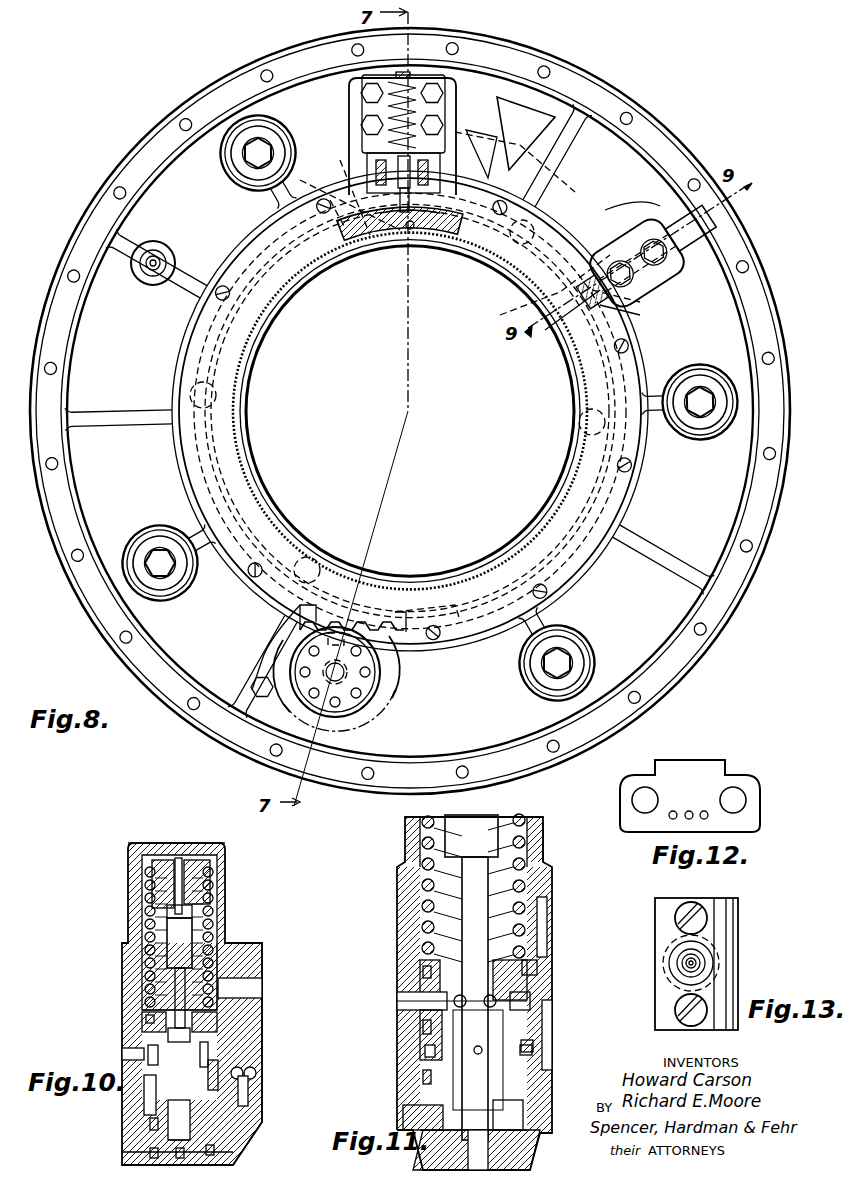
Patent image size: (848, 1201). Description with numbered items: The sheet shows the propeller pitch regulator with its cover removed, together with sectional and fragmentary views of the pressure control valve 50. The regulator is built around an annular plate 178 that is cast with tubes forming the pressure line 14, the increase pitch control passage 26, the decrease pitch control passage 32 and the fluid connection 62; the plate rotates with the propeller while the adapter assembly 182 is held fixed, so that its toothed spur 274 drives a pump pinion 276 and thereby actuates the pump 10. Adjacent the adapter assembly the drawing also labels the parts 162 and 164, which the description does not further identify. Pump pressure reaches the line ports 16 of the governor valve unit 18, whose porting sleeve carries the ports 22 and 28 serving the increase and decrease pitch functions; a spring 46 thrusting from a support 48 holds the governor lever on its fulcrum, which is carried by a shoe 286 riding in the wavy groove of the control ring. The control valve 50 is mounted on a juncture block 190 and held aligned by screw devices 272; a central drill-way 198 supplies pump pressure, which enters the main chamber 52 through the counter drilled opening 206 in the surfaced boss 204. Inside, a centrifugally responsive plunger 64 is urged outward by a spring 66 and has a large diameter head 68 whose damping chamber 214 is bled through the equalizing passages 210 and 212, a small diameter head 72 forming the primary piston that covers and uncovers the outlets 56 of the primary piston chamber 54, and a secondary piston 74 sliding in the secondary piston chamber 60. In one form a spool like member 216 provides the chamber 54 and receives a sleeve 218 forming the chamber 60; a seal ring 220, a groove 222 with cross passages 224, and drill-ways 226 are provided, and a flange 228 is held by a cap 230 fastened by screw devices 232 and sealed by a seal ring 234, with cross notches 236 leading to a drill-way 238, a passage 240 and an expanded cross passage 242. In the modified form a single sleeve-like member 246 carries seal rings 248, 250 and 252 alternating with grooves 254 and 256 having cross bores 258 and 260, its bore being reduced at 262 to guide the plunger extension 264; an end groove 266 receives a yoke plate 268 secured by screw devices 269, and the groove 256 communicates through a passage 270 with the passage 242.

In FIG. 8, the pump 10 is at (672, 255).
In FIG. 8, the pressure line 14 is at (550, 178).
In FIG. 8, the line ports 16 is at (372, 120).
In FIG. 8, the governor valve unit 18 is at (440, 112).
In FIG. 8, the port 22 is at (362, 100).
In FIG. 8, the control passage 26 is at (345, 190).
In FIG. 8, the port 28 is at (376, 143).
In FIG. 8, the control passage 32 is at (290, 298).
In FIG. 8, the spring 46 is at (428, 145).
In FIG. 8, the support 48 is at (408, 76).
In FIG. 8, the pressure control valve 50 is at (668, 212).
In FIG. 10, the pressure control valve 50 is at (102, 887).
In FIG. 11, the pressure control valve 50 is at (576, 843).
In FIG. 12, the pressure control valve 50 is at (788, 809).
In FIG. 10, the main chamber 52 is at (146, 912).
In FIG. 11, the main chamber 52 is at (520, 856).
In FIG. 10, the primary piston chamber 54 is at (222, 1020).
In FIG. 11, the primary piston chamber 54 is at (500, 975).
In FIG. 10, the outlets 56 is at (128, 1057).
In FIG. 11, the outlets 56 is at (410, 998).
In FIG. 12, the outlets 56 is at (704, 810).
In FIG. 10, the secondary piston chamber 60 is at (232, 1160).
In FIG. 8, the fluid connection 62 is at (512, 316).
In FIG. 10, the plunger 64 is at (176, 950).
In FIG. 11, the plunger 64 is at (495, 830).
In FIG. 10, the spring 66 is at (148, 932).
In FIG. 11, the spring 66 is at (525, 885).
In FIG. 10, the large diameter head 68 is at (196, 862).
In FIG. 10, the small diameter head 72 is at (150, 1025).
In FIG. 11, the small diameter head 72 is at (445, 993).
In FIG. 10, the secondary piston 74 is at (178, 1147).
In FIG. 8, the gear ring 162 is at (330, 245).
In FIG. 8, the pin 164 is at (414, 232).
In FIG. 8, the annular plate 178 is at (136, 227).
In FIG. 8, the adapter assembly 182 is at (404, 245).
In FIG. 8, the juncture block 190 is at (626, 232).
In FIG. 8, the central drill-way 198 is at (648, 298).
In FIG. 10, the surfaced boss 204 is at (246, 960).
In FIG. 10, the counter drilled opening 206 is at (252, 990).
In FIG. 11, the counter drilled opening 206 is at (547, 925).
In FIG. 10, the damping and equalizing passage 210 is at (200, 905).
In FIG. 10, the damping and equalizing passage 212 is at (177, 858).
In FIG. 10, the damping chamber 214 is at (150, 862).
In FIG. 10, the spool like member 216 is at (150, 1018).
In FIG. 10, the sleeve 218 is at (152, 1127).
In FIG. 10, the seal ring 220 is at (222, 1033).
In FIG. 10, the groove 222 is at (218, 1050).
In FIG. 10, the cross passages 224 is at (158, 1048).
In FIG. 10, the drill-ways 226 is at (215, 1070).
In FIG. 10, the flange 228 is at (146, 1115).
In FIG. 8, the cap 230 is at (560, 322).
In FIG. 10, the cap 230 is at (140, 1160).
In FIG. 8, the screw devices 232 is at (642, 312).
In FIG. 10, the seal ring 234 is at (214, 1150).
In FIG. 10, the cross notches 236 is at (160, 1155).
In FIG. 10, the drill-way 238 is at (250, 1137).
In FIG. 10, the passage 240 is at (246, 1100).
In FIG. 10, the cross passage with expanded opening 242 is at (252, 1076).
In FIG. 11, the cross passage with expanded opening 242 is at (550, 1020).
In FIG. 11, the sleeve-like member 246 is at (432, 1015).
In FIG. 13, the sleeve-like member 246 is at (712, 962).
In FIG. 11, the seal ring 248 is at (430, 985).
In FIG. 11, the seal ring 250 is at (428, 1030).
In FIG. 11, the seal ring 252 is at (425, 1078).
In FIG. 11, the groove 254 is at (520, 1000).
In FIG. 11, the groove 256 is at (534, 1050).
In FIG. 11, the cross bores 258 is at (522, 985).
In FIG. 11, the cross bores 260 is at (437, 1055).
In FIG. 11, the reduced diameter bore 262 is at (505, 1125).
In FIG. 11, the extension 264 is at (483, 1083).
In FIG. 11, the end groove 266 is at (528, 1124).
In FIG. 11, the yoke plate 268 is at (410, 1112).
In FIG. 13, the yoke plate 268 is at (660, 937).
In FIG. 13, the screw devices 269 is at (700, 922).
In FIG. 11, the passage 270 is at (532, 1050).
In FIG. 8, the screw devices 272 is at (668, 285).
In FIG. 8, the toothed spur 274 is at (362, 615).
In FIG. 8, the pump pinion 276 is at (282, 634).
In FIG. 8, the shoe 286 is at (422, 250).